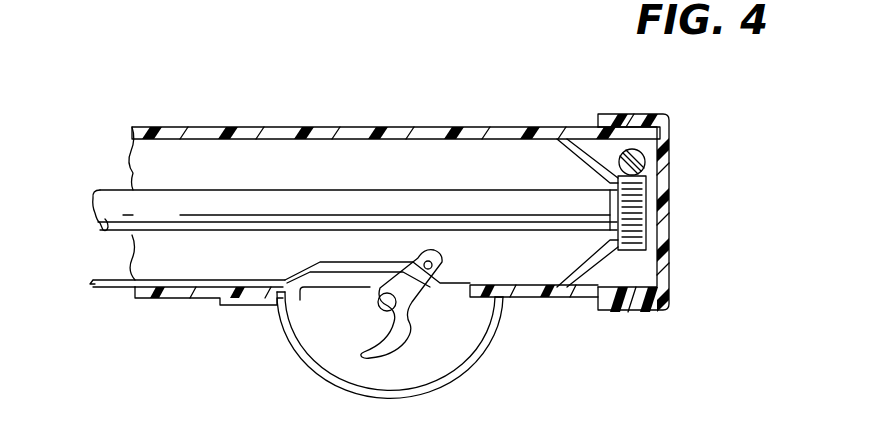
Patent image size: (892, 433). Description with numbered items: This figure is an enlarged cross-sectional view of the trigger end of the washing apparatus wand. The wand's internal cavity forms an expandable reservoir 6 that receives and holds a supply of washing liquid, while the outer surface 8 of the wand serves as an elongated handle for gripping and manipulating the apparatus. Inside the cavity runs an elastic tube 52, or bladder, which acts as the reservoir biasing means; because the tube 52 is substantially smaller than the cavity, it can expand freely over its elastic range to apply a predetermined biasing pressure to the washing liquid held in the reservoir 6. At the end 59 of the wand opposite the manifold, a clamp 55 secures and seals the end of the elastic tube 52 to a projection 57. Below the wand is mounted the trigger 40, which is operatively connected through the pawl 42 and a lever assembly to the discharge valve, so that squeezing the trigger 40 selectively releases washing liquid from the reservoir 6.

The expandable reservoir 6 is at (257, 145).
The outer surface 8 is at (362, 128).
The elastic tube 52 is at (402, 200).
The pawl 42 is at (123, 285).
The trigger 40 is at (417, 290).
The clamp 55 is at (652, 189).
The projection 57 is at (655, 213).
The end of wand 59 is at (680, 293).